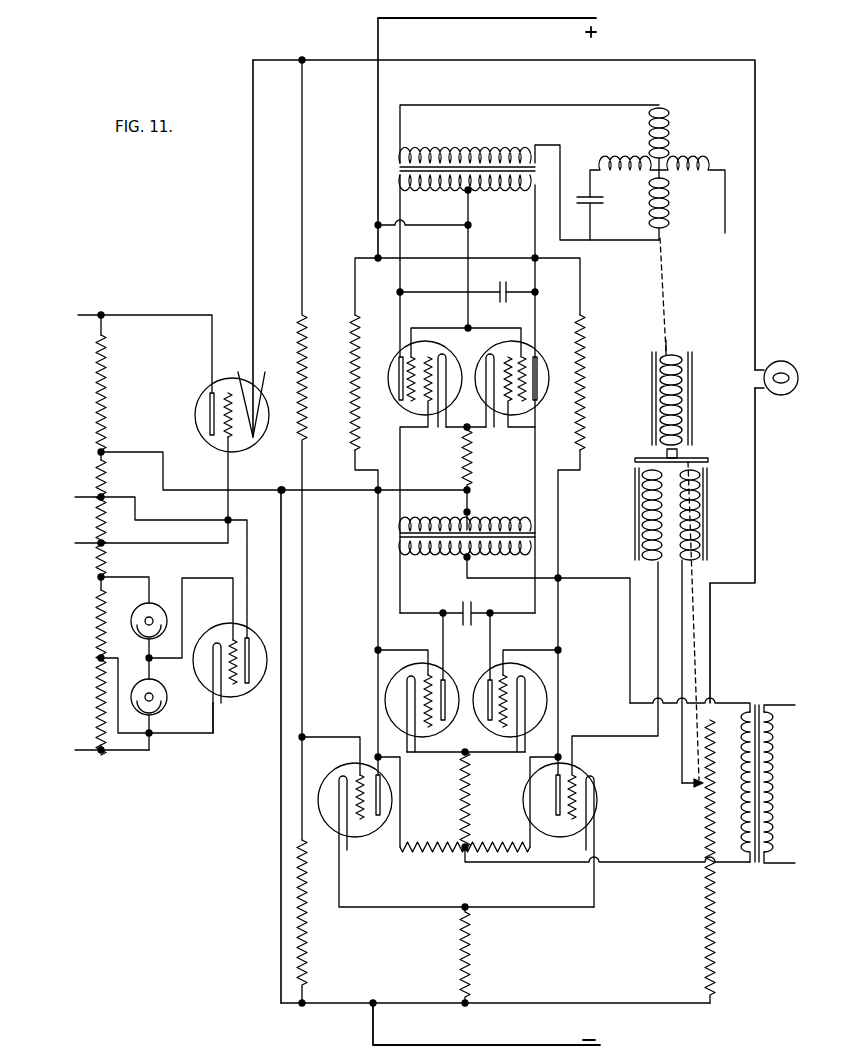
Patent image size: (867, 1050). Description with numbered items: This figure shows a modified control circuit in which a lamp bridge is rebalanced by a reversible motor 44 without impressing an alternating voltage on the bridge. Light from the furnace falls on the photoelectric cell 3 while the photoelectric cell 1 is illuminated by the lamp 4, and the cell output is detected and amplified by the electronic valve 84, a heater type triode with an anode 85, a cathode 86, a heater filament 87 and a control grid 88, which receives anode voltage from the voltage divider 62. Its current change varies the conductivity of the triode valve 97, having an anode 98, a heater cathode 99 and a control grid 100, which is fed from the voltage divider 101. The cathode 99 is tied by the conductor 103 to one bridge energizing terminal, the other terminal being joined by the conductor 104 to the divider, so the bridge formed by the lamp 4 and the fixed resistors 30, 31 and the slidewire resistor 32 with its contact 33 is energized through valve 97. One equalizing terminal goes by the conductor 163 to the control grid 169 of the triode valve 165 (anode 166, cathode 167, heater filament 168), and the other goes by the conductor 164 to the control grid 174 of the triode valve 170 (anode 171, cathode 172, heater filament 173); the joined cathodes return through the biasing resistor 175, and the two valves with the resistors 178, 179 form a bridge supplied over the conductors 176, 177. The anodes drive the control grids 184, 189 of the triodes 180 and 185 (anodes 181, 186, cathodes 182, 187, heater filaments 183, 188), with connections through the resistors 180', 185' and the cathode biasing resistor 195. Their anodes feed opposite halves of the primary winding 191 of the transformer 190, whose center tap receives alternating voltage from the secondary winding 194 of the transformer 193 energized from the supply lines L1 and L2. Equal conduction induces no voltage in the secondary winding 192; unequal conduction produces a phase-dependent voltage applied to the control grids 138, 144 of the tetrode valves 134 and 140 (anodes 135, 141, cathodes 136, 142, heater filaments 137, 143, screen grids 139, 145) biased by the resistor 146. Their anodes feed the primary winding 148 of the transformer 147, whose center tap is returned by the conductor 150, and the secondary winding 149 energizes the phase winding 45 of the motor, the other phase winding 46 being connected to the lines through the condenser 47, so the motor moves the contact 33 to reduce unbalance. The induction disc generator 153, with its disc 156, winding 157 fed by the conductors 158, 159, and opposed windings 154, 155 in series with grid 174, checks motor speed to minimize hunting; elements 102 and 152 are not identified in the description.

The photoelectric cell 1 is at (168, 702).
The photoelectric cell 3 is at (153, 604).
The lamp 4 is at (795, 393).
The fixed resistor 30 is at (299, 450).
The fixed resistor 31 is at (307, 932).
The slidewire resistor 32 is at (705, 816).
The contact 33 is at (699, 789).
The reversible motor 44 is at (642, 145).
The phase winding 45 is at (668, 203).
The phase winding 46 is at (688, 168).
The condenser 47 is at (598, 200).
The voltage divider 62 is at (97, 640).
The electronic valve 84 is at (231, 665).
The anode 85 is at (250, 655).
The cathode 86 is at (216, 643).
The heater filament 87 is at (235, 640).
The control grid 88 is at (228, 721).
The electronic valve 97 is at (225, 423).
The anode 98 is at (210, 412).
The heater cathode 99 is at (258, 428).
The control grid 100 is at (226, 437).
The voltage divider 101 is at (97, 396).
The resistor 102 is at (97, 532).
The conductor 103 is at (253, 229).
The conductor 104 is at (281, 895).
The electronic valve 134 is at (523, 399).
The anode 135 is at (526, 392).
The cathode 136 is at (487, 355).
The heater filament 137 is at (506, 355).
The control grid 138 is at (536, 402).
The screen grid 139 is at (524, 403).
The electronic valve 140 is at (409, 436).
The anode 141 is at (400, 392).
The cathode 142 is at (446, 356).
The heater filament 143 is at (438, 350).
The control grid 144 is at (438, 420).
The screen grid 145 is at (426, 403).
The biasing resistor 146 is at (472, 462).
The transformer 147 is at (496, 217).
The primary winding 148 is at (484, 195).
The secondary winding 149 is at (480, 152).
The conductor 150 is at (418, 225).
The condenser 152 is at (503, 283).
The induction disc generator 153 is at (670, 510).
The winding 154 is at (690, 560).
The winding 155 is at (656, 560).
The disc 156 is at (650, 458).
The winding 157 is at (678, 342).
The conductor 158 is at (654, 350).
The conductor 159 is at (676, 350).
The conductor 163 is at (346, 737).
The conductor 164 is at (682, 770).
The electronic valve 165 is at (340, 828).
The anode 166 is at (377, 818).
The cathode 167 is at (447, 825).
The heater filament 168 is at (359, 772).
The control grid 169 is at (360, 820).
The electronic valve 170 is at (598, 803).
The anode 171 is at (556, 818).
The cathode 172 is at (577, 792).
The heater filament 173 is at (590, 734).
The control grid 174 is at (588, 850).
The biasing resistor 175 is at (470, 940).
The conductor 176 is at (444, 1045).
The conductor 177 is at (444, 19).
The resistor 178 is at (318, 450).
The resistor 179 is at (586, 366).
The electronic valve 180 is at (397, 695).
The resistor 180' is at (432, 836).
The anode 181 is at (464, 622).
The cathode 182 is at (408, 680).
The heater filament 183 is at (428, 672).
The control grid 184 is at (412, 752).
The electronic valve 185 is at (531, 695).
The resistor 185' is at (497, 836).
The anode 186 is at (490, 680).
The cathode 187 is at (506, 676).
The heater filament 188 is at (521, 676).
The control grid 189 is at (522, 752).
The transformer 190 is at (477, 598).
The primary winding 191 is at (456, 558).
The secondary winding 192 is at (478, 517).
The transformer 193 is at (762, 712).
The secondary winding 194 is at (740, 716).
The cathode biasing resistor 195 is at (471, 796).
The alternating current supply line L1 is at (790, 707).
The alternating current supply line L2 is at (788, 864).